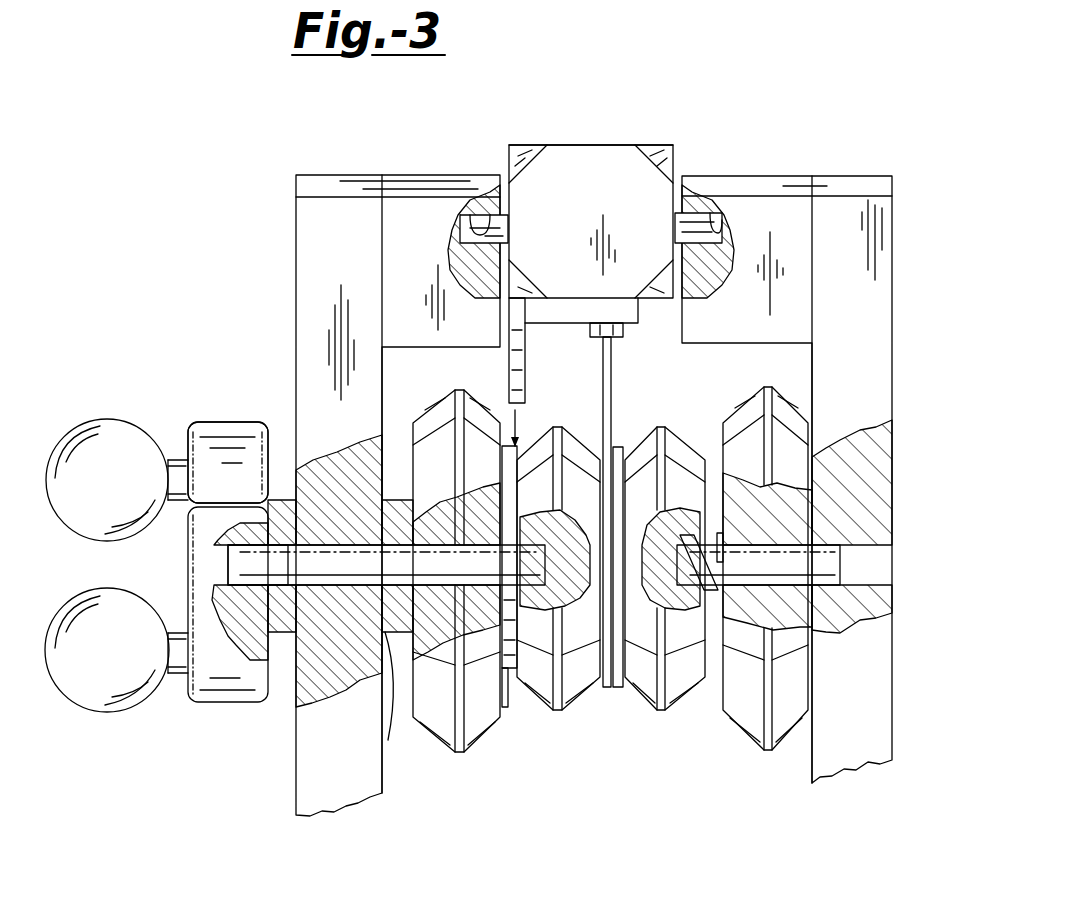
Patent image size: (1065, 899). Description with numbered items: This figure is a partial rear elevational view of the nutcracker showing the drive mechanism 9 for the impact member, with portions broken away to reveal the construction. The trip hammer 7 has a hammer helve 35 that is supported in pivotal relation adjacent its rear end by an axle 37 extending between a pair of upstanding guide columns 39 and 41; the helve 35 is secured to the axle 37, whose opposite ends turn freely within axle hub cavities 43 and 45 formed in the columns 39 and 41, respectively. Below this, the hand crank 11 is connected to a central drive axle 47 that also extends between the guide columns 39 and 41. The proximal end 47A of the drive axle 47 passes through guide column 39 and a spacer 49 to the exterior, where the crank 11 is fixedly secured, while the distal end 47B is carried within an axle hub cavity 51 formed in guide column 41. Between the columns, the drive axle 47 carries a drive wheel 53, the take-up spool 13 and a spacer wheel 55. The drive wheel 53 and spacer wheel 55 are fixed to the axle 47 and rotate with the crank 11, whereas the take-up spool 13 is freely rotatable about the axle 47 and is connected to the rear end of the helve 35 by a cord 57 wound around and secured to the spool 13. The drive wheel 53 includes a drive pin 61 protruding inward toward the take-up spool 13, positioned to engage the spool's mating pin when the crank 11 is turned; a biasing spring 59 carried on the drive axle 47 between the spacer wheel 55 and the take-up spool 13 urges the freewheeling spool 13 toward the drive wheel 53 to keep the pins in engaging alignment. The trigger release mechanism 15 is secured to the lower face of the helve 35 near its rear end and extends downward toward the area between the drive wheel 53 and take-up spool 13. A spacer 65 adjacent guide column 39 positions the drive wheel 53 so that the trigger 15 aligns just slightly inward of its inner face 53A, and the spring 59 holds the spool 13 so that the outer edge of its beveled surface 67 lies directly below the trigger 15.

The trip hammer 7 is at (625, 135).
The drive mechanism 9 is at (275, 416).
The hand crank 11 is at (212, 428).
The take-up spool 13 is at (647, 685).
The trigger release mechanism 15 is at (518, 318).
The hammer helve 35 is at (592, 208).
The axle 37 is at (703, 190).
The guide column 39 is at (312, 246).
The guide column 41 is at (868, 308).
The axle hub cavity 43 is at (483, 216).
The axle hub cavity 45 is at (712, 228).
The drive axle 47 is at (412, 536).
The proximal end 47A is at (228, 563).
The distal end 47B is at (836, 600).
The spacer 49 is at (274, 690).
The axle hub cavity 51 is at (822, 572).
The drive wheel 53 is at (456, 755).
The inner face 53A is at (506, 706).
The spacer wheel 55 is at (773, 752).
The cord 57 is at (612, 372).
The biasing spring 59 is at (712, 600).
The drive pin 61 is at (510, 672).
The spacer 65 is at (402, 640).
The beveled surface 67 is at (538, 450).